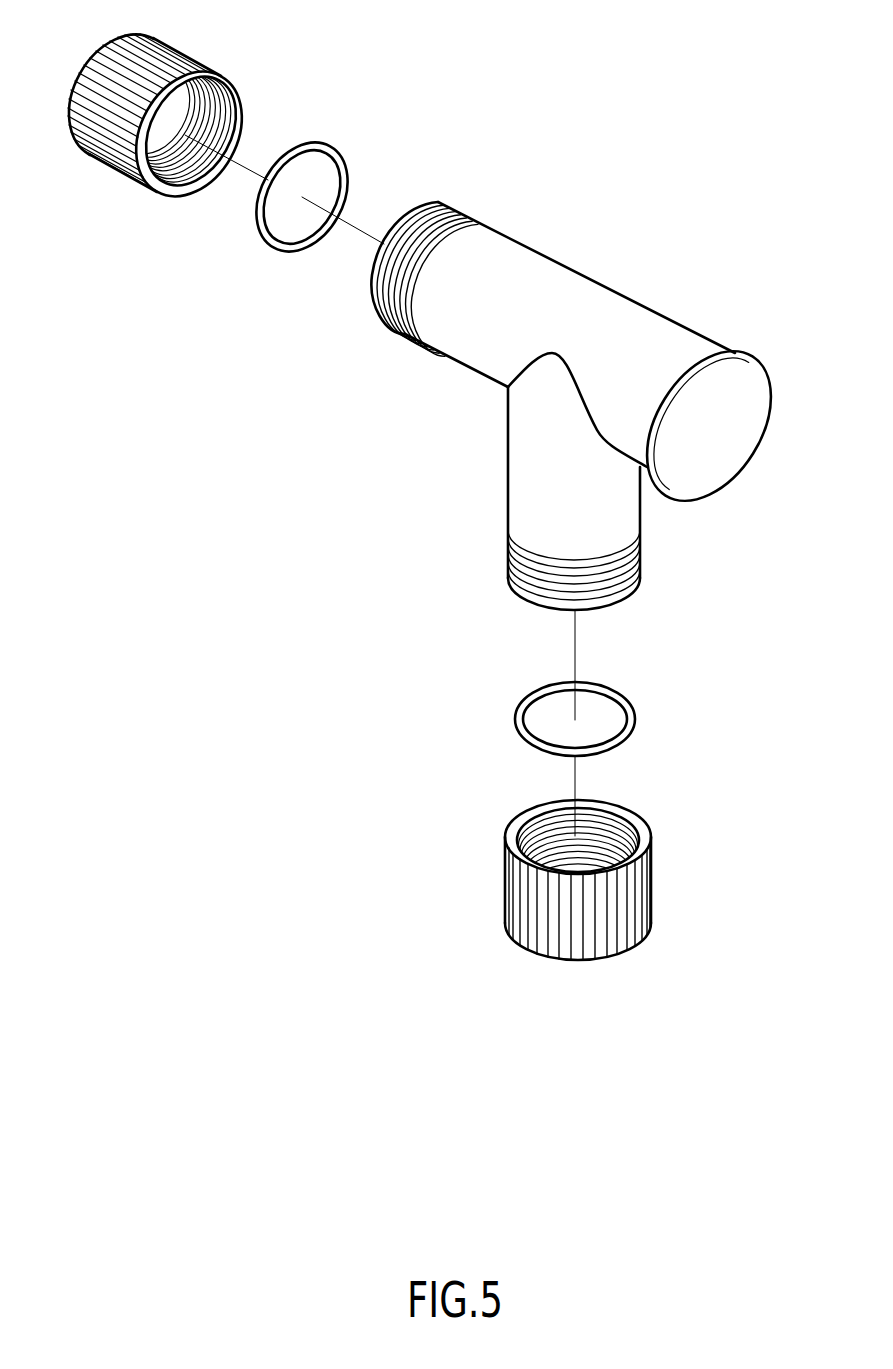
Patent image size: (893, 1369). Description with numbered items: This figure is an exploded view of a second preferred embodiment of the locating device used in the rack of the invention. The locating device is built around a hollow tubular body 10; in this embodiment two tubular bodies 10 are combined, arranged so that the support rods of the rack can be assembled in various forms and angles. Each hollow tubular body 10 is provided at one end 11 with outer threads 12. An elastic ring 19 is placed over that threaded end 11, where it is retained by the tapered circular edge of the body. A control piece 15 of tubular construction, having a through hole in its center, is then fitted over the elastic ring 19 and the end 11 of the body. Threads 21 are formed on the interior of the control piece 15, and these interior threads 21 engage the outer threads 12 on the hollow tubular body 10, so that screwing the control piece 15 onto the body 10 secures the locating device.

The hollow tubular body 10 is at (585, 287).
The end 11 is at (583, 418).
The outer threads 12 is at (453, 203).
The control piece 15 is at (394, 485).
The elastic ring 19 is at (339, 143).
The threads 21 is at (618, 835).